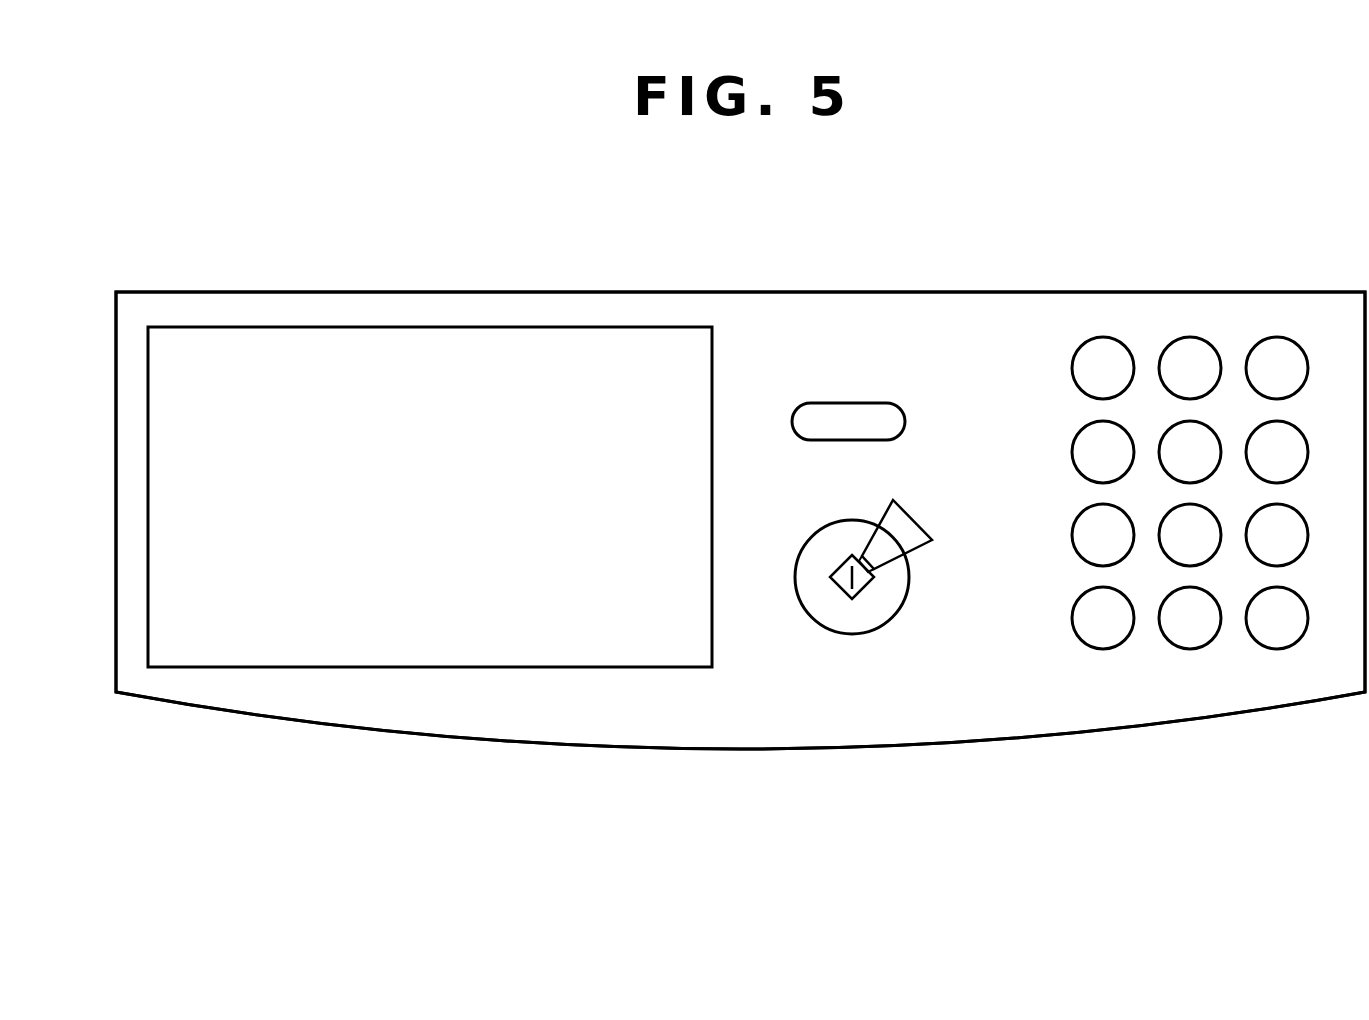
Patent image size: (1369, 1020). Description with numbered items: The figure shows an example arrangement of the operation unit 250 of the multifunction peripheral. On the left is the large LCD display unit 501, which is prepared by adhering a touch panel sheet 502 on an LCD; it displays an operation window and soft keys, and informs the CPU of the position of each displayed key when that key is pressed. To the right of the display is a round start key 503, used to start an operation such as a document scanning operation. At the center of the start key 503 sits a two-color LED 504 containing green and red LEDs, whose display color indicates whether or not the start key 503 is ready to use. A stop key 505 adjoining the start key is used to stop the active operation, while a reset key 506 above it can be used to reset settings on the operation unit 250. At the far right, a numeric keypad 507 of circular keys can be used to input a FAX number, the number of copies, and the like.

The operation unit 250 is at (282, 292).
The LCD display unit 501 is at (148, 440).
The touch panel sheet 502 is at (165, 564).
The start key 503 is at (853, 634).
The two-color LED 504 is at (860, 590).
The stop key 505 is at (917, 510).
The reset key 506 is at (850, 403).
The numeric keypad 507 is at (1190, 649).